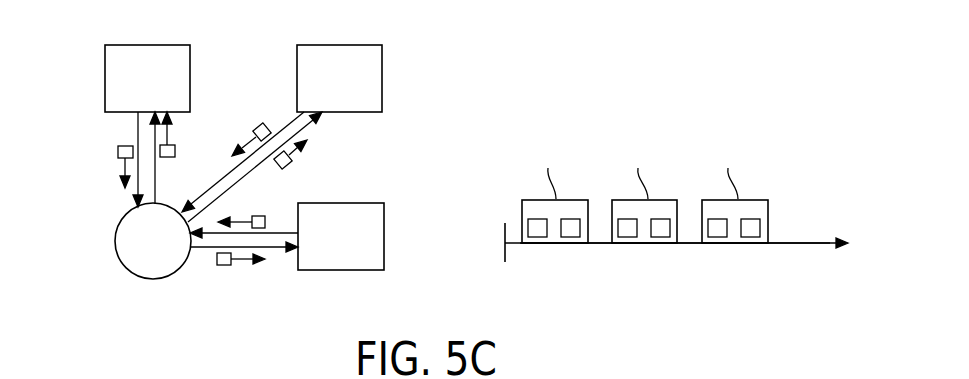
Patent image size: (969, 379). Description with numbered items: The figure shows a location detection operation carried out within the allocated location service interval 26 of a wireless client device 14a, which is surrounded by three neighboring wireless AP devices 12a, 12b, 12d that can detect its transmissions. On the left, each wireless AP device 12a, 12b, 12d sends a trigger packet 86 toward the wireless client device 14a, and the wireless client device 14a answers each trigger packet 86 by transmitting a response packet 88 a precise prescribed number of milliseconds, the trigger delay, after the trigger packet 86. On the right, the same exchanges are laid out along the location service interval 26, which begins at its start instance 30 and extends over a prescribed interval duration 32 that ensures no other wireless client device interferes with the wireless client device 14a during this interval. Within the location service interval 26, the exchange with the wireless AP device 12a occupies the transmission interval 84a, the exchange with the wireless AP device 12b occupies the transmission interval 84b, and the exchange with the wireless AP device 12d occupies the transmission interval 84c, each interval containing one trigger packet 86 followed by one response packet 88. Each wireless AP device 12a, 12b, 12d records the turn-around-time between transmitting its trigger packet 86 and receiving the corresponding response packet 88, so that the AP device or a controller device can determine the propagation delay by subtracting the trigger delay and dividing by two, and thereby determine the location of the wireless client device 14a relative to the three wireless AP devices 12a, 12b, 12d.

The wireless access point device 12a is at (105, 55).
The wireless access point device 12b is at (297, 52).
The wireless access point device 12d is at (379, 203).
The wireless client device 14a is at (130, 245).
The transmission interval t1 84a is at (545, 133).
The transmission interval t2 84b is at (635, 133).
The transmission interval t3 84c is at (725, 133).
The trigger packet 86 is at (118, 153).
The response packet 88 is at (175, 151).
The start instance 30 is at (503, 248).
The prescribed interval duration 32 is at (802, 221).
The location service interval 26 is at (801, 247).